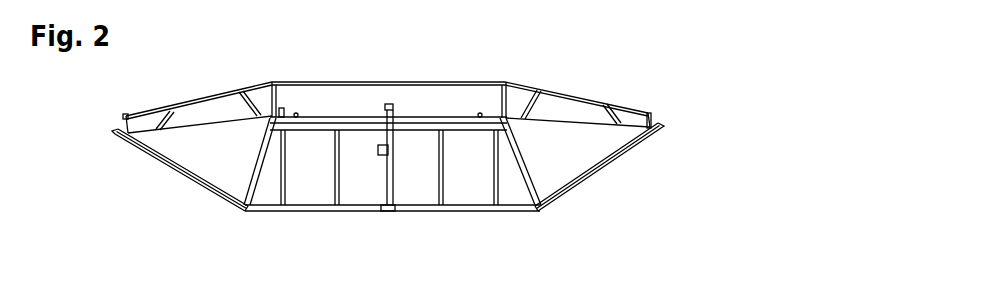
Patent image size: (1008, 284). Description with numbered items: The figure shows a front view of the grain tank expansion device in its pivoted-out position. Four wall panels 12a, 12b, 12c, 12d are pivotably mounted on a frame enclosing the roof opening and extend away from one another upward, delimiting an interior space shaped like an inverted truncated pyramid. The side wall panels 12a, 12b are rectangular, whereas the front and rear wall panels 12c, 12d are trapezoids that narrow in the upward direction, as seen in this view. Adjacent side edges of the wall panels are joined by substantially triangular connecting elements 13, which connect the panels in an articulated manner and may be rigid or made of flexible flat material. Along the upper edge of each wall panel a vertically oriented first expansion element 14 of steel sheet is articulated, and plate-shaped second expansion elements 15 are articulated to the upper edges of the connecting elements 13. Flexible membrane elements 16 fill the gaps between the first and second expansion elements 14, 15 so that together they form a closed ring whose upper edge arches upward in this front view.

The side wall panel 12a is at (618, 160).
The side wall panel 12b is at (140, 155).
The front wall panel 12c is at (305, 190).
The rear wall panel 12d is at (434, 106).
The connecting element 13 is at (210, 170).
The first expansion element 14 is at (124, 127).
The second expansion element 15 is at (196, 108).
The membrane element 16 is at (147, 122).